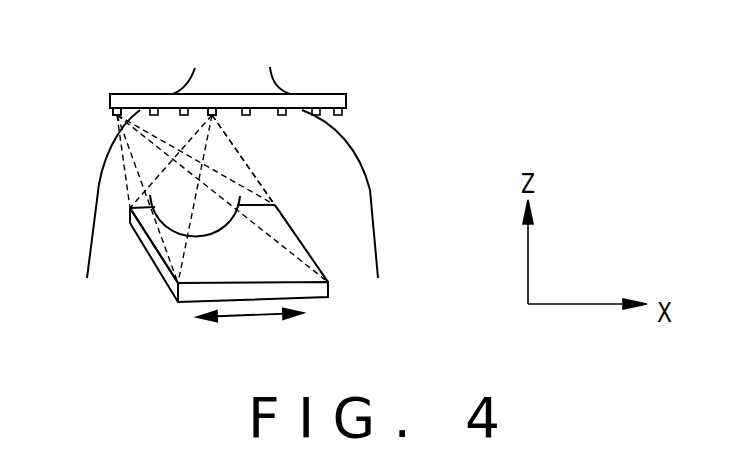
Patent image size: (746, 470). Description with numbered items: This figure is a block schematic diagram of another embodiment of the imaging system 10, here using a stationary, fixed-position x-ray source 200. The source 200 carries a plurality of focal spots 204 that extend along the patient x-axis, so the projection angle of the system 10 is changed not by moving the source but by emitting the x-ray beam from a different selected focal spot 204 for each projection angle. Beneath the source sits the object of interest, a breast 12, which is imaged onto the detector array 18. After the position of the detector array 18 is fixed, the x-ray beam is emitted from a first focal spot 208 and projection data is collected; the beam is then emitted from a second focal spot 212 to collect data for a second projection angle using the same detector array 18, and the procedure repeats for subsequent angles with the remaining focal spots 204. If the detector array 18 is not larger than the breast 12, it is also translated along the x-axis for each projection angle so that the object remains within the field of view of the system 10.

The imaging system 10 is at (498, 101).
The breast 12 is at (219, 274).
The detector array 18 is at (330, 290).
The stationary x-ray source 200 is at (348, 99).
The focal spots 204 is at (110, 118).
The first focal spot 208 is at (112, 114).
The second focal spot 212 is at (213, 110).